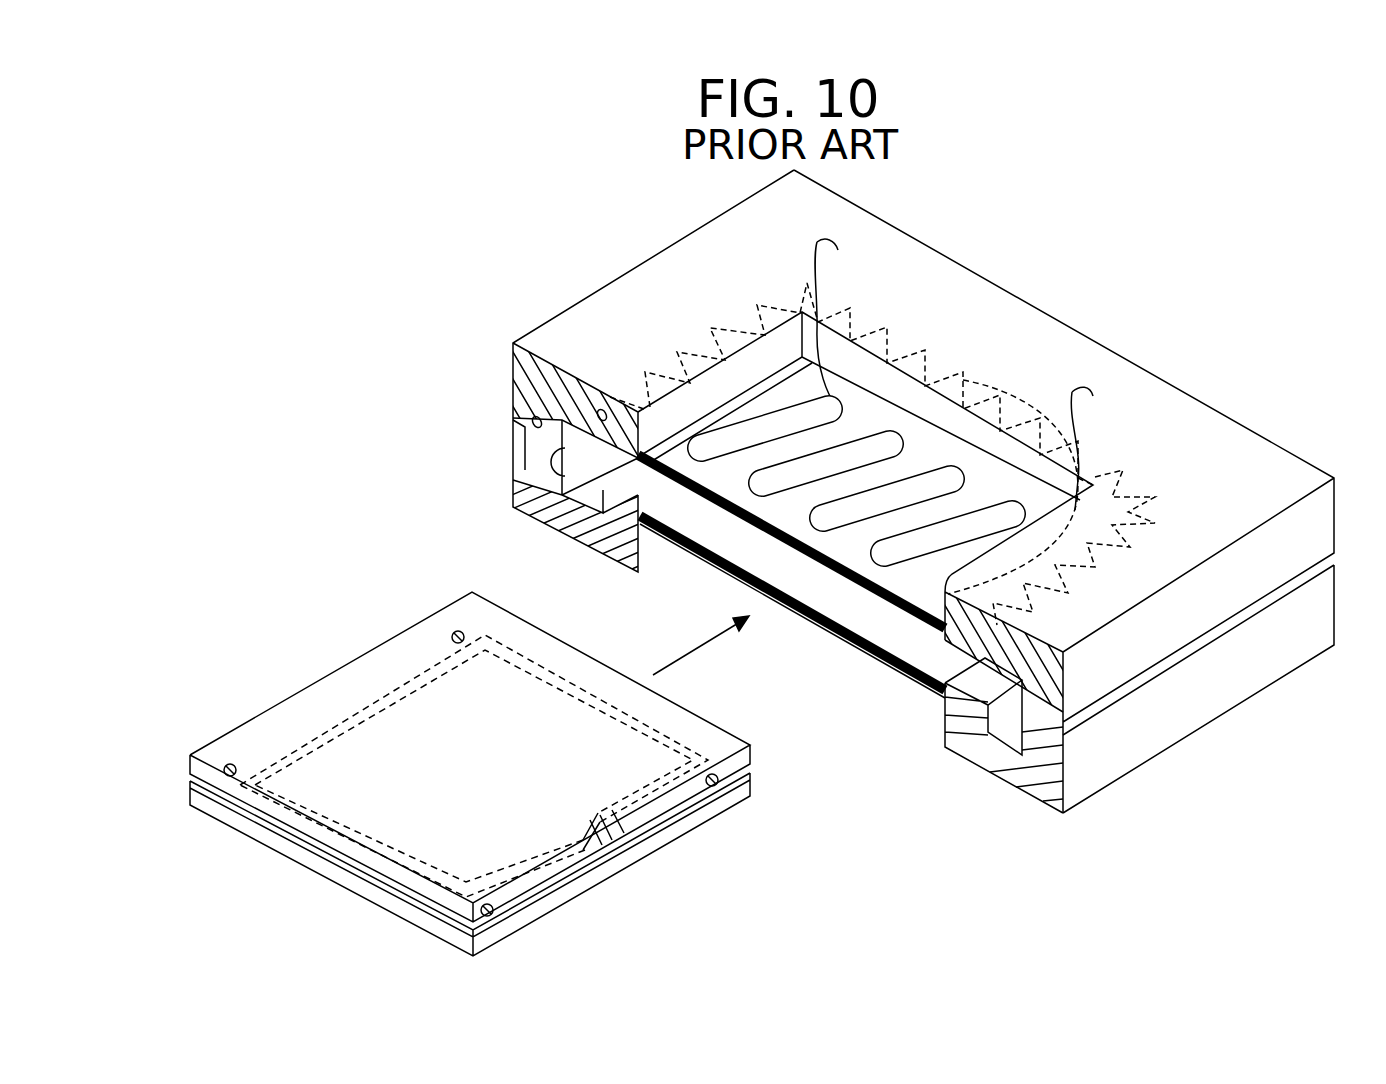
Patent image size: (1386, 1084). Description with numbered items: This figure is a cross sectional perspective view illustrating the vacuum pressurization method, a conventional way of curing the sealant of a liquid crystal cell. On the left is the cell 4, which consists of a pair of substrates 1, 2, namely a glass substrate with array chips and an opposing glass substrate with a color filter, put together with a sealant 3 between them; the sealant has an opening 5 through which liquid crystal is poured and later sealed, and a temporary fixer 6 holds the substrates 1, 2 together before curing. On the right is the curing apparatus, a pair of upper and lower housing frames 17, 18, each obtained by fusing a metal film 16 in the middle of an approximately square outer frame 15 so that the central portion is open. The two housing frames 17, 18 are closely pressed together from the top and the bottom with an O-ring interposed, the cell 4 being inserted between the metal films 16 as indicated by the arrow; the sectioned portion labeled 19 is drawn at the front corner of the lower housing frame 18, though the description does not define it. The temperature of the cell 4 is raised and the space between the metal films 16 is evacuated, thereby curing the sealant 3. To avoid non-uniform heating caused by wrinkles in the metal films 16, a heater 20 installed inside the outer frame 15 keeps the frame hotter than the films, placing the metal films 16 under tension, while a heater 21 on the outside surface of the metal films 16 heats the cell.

The substrate 1 is at (395, 648).
The substrate 2 is at (673, 827).
The sealant 3 is at (583, 685).
The cell 4 is at (470, 747).
The opening 5 is at (620, 848).
The temporary fixer 6 is at (457, 630).
The outer frame 15 is at (1258, 457).
The metal film 16 is at (927, 463).
The upper housing frame 17 is at (881, 521).
The lower housing frame 18 is at (994, 785).
The seal section 19 is at (1053, 710).
The heater 20 is at (512, 370).
The heater 21 is at (838, 405).